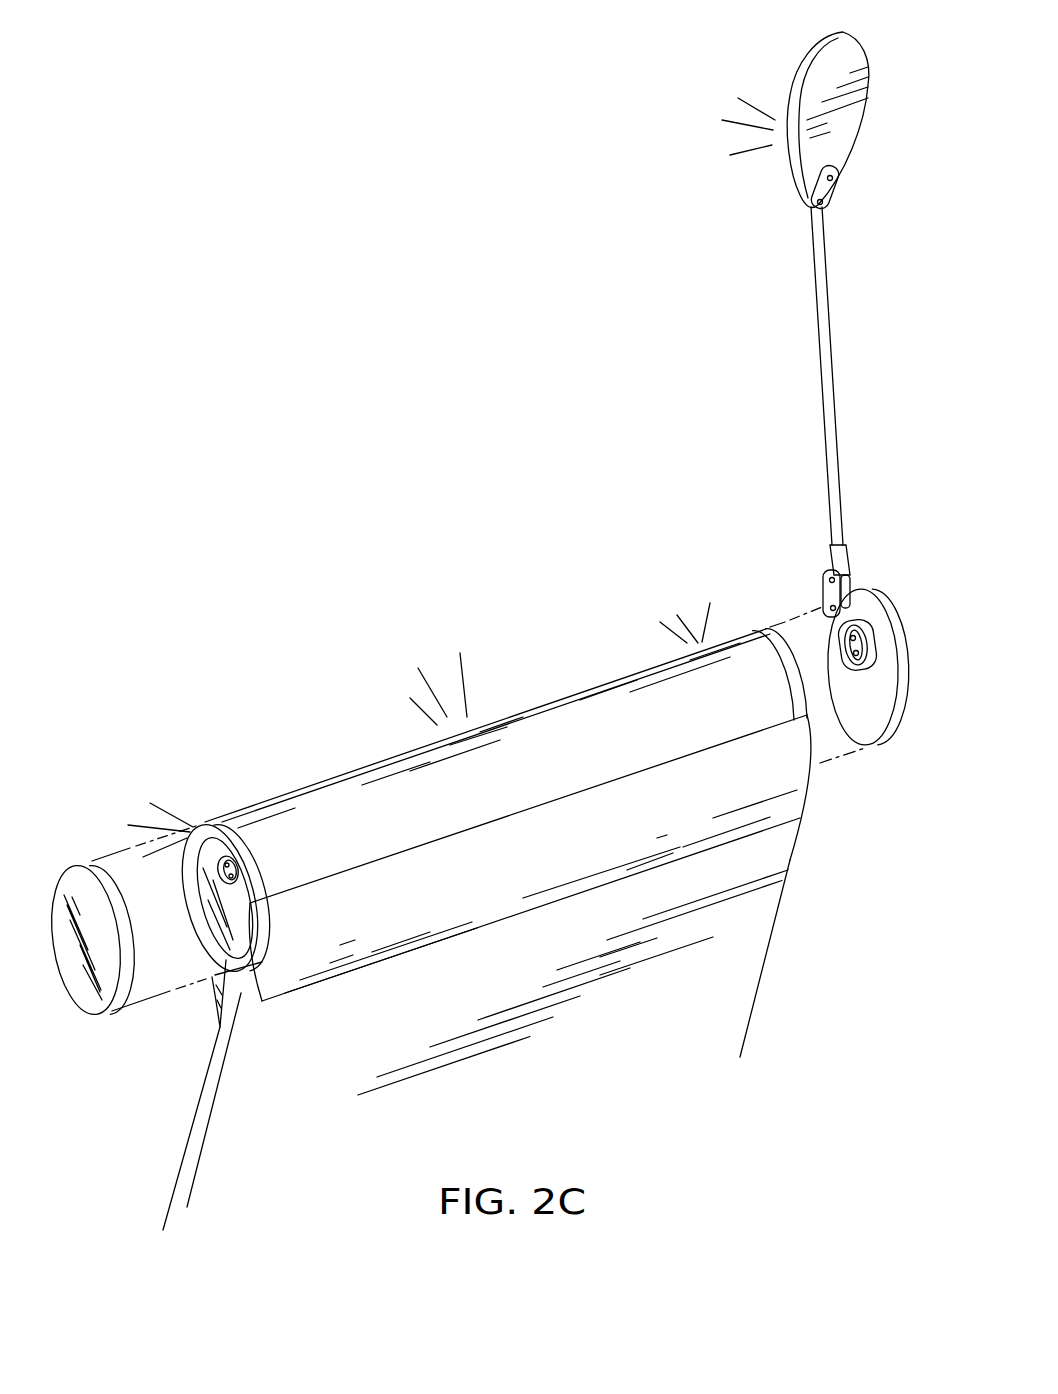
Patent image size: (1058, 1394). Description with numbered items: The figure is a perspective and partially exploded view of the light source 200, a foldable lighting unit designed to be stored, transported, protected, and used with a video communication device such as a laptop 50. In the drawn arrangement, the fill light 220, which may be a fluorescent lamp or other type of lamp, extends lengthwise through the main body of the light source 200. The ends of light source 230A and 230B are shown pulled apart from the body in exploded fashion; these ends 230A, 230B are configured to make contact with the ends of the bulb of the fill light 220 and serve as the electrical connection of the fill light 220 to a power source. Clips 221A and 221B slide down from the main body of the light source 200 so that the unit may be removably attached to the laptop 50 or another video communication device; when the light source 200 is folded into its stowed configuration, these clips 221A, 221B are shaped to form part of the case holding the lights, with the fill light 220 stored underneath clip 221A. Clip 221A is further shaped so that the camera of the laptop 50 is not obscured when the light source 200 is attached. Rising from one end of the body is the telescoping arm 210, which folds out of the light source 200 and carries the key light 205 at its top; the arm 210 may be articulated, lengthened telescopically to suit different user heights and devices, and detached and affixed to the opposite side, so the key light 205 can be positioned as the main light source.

The light source 200 is at (348, 240).
The key light 205 is at (811, 62).
The telescoping arm 210 is at (826, 333).
The fill light 220 is at (560, 717).
The clip 221A is at (210, 1001).
The clip 221B is at (797, 792).
The end of light source 230A is at (88, 862).
The end of light source 230B is at (890, 598).
The laptop 50 is at (320, 1069).